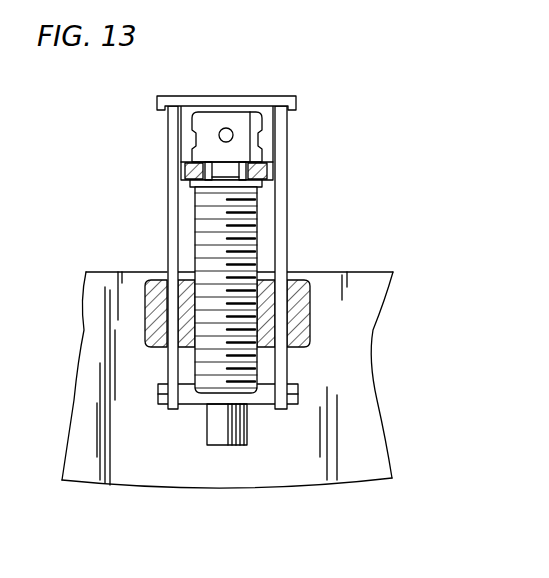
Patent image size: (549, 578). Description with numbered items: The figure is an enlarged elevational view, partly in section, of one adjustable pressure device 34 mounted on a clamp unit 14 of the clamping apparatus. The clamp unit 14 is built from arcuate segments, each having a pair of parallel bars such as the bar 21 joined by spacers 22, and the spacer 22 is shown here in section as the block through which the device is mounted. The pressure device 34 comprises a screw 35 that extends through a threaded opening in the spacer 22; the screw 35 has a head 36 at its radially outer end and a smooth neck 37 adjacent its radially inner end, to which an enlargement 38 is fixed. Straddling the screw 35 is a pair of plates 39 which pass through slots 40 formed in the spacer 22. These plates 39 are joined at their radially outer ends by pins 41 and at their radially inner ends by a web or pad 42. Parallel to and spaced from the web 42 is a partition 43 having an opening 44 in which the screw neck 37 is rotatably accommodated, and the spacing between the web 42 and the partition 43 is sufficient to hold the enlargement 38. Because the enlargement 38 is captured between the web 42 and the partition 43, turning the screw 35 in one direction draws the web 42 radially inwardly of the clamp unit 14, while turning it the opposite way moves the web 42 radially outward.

The clamp unit 14 is at (435, 354).
The bar 21 is at (370, 417).
The spacer 22 is at (305, 293).
The adjustable pressure device 34 is at (305, 188).
The screw 35 is at (258, 250).
The head 36 is at (230, 440).
The smooth neck 37 is at (247, 172).
The enlargement 38 is at (250, 123).
The plates 39 is at (167, 229).
The slots 40 is at (165, 318).
The pins 41 is at (192, 398).
The web or pad 42 is at (210, 96).
The partition 43 is at (185, 168).
The opening 44 is at (207, 157).